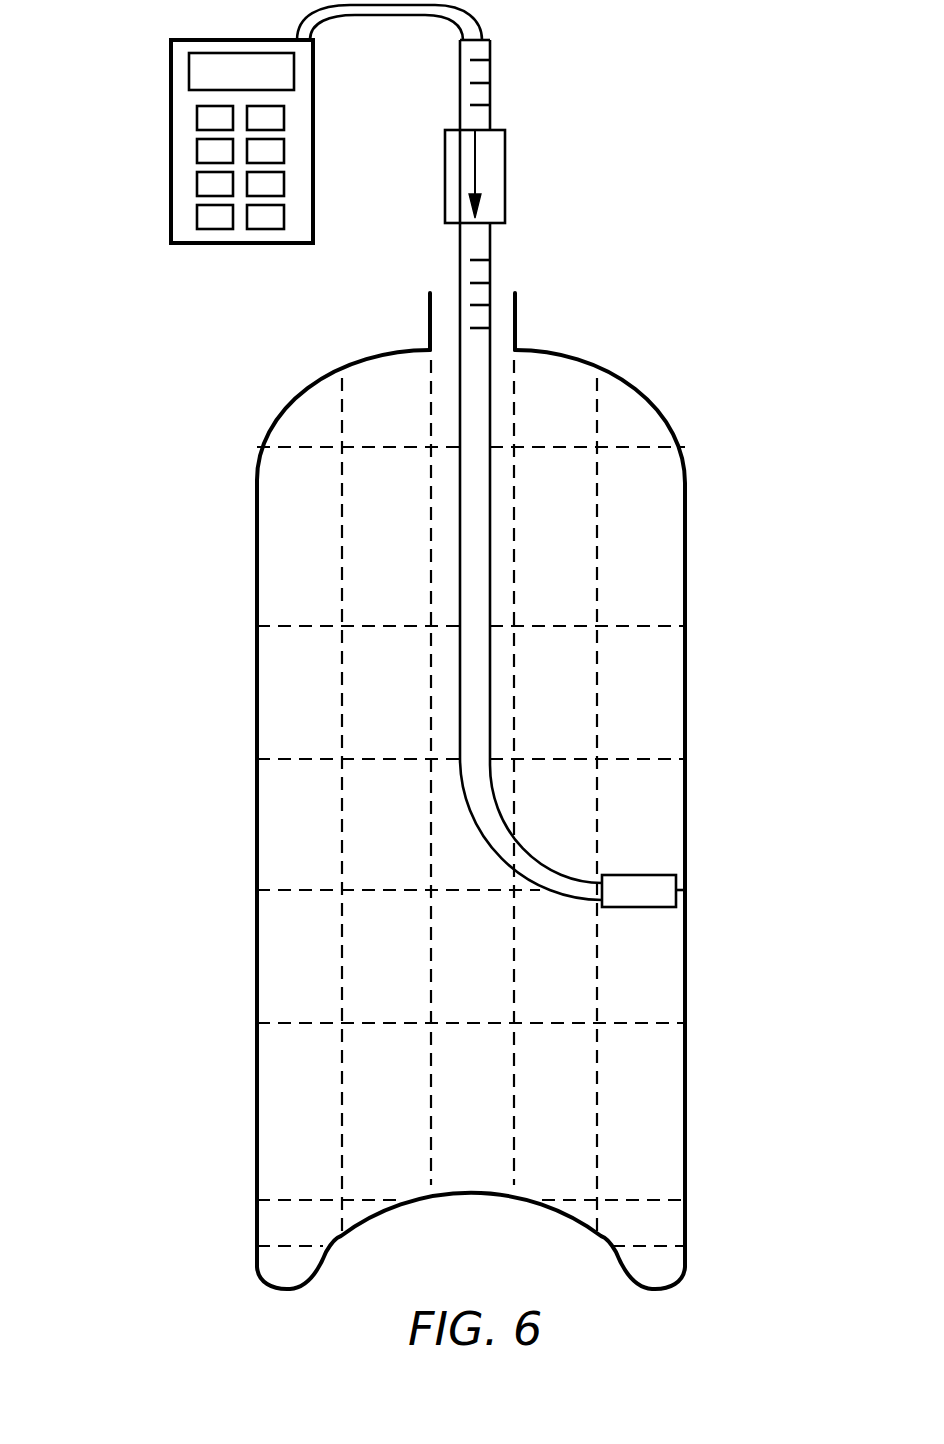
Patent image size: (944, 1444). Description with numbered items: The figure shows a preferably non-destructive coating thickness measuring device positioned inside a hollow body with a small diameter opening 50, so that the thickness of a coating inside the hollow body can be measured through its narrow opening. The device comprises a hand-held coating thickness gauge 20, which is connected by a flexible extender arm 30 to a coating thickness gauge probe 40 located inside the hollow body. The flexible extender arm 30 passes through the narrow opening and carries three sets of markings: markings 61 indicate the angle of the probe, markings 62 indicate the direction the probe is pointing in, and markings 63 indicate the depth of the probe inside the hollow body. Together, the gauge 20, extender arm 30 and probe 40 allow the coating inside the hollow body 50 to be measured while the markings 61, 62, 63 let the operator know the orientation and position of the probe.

The hand-held coating thickness gauge 20 is at (171, 155).
The flexible extender arm 30 is at (460, 556).
The coating thickness gauge probe 40 is at (667, 882).
The hollow body with a small diameter opening 50 is at (507, 321).
The markings 61 is at (491, 77).
The markings 62 is at (478, 167).
The markings 63 is at (492, 271).